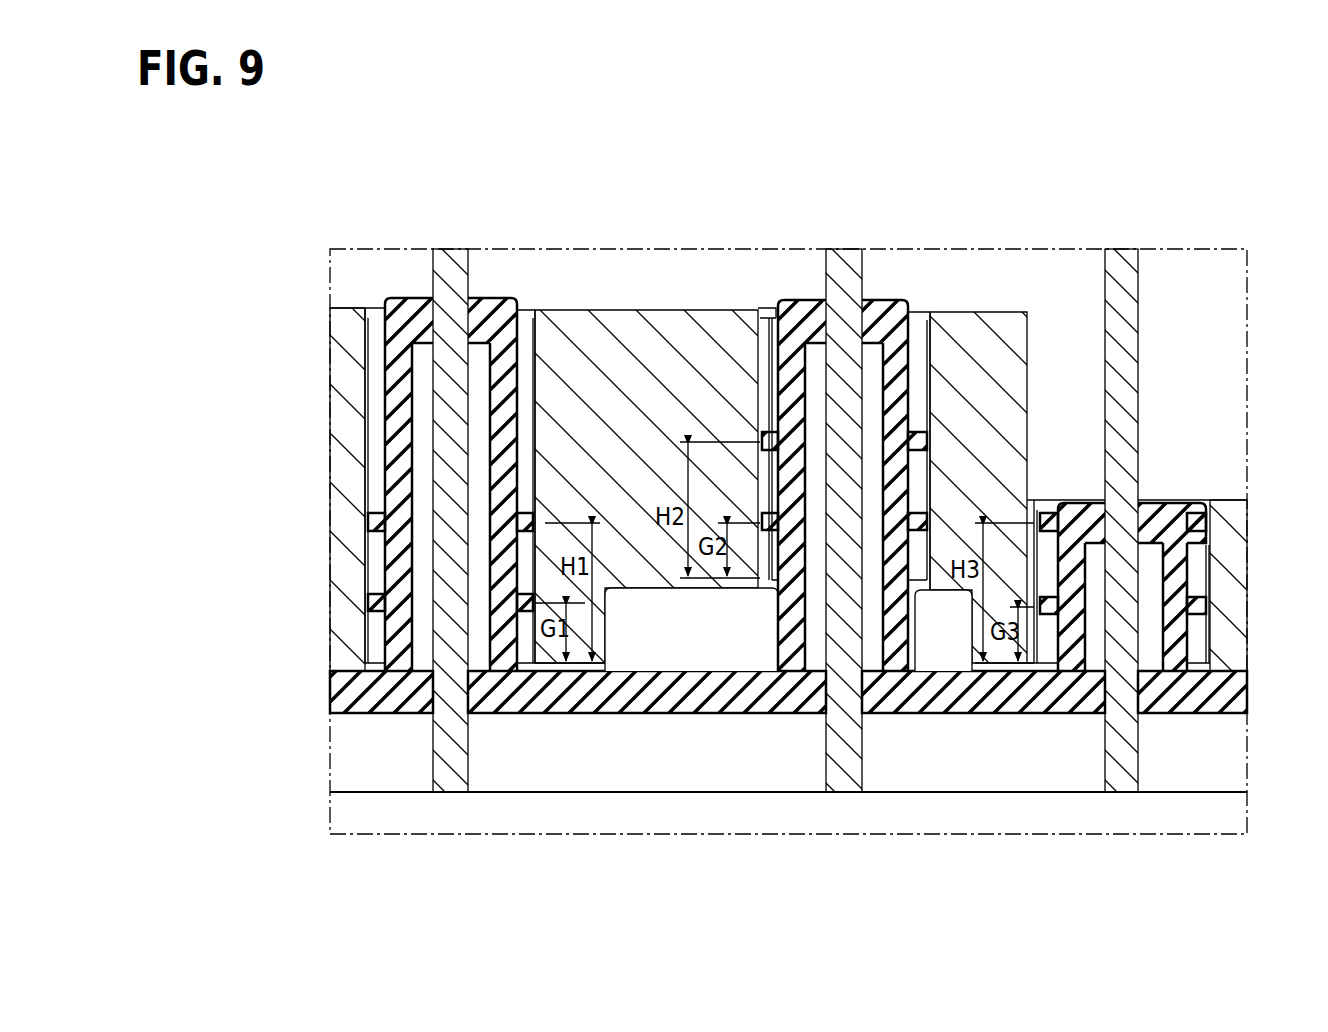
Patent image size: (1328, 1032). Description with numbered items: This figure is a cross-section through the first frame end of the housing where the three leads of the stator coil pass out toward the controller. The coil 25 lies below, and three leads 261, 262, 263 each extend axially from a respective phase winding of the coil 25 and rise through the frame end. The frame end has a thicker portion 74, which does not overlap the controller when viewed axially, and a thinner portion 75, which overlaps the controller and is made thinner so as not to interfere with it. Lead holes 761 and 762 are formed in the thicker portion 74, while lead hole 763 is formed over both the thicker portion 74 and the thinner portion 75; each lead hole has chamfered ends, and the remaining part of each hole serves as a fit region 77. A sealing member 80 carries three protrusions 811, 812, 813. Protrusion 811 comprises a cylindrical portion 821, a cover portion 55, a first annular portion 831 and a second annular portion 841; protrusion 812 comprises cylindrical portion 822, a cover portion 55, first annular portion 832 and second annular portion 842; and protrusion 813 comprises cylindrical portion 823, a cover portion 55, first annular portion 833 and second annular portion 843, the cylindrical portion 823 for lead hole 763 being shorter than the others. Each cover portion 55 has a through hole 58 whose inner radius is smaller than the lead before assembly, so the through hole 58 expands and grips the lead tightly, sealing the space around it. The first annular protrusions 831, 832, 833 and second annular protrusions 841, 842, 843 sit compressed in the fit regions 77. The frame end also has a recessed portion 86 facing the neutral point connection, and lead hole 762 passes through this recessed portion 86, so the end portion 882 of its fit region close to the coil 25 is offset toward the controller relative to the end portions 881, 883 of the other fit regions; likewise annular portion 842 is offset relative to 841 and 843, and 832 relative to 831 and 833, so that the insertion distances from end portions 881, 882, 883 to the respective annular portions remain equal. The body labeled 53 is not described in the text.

The coil 25 is at (1227, 780).
The bottom wall 53 is at (785, 777).
The cover portion 55 is at (423, 320).
The through hole 58 is at (438, 318).
The thicker portion 74 is at (616, 310).
The thinner portion 75 is at (1237, 658).
The fit region 77 is at (375, 462).
The sealing member 80 is at (560, 718).
The recessed portion 86 is at (632, 640).
The lead 261 is at (452, 290).
The lead 262 is at (851, 260).
The lead 263 is at (1127, 260).
The lead hole 761 is at (376, 349).
The lead hole 762 is at (768, 320).
The lead hole 763 is at (1040, 620).
The protrusion 811 is at (506, 300).
The protrusion 812 is at (898, 300).
The protrusion 813 is at (1183, 502).
The cylindrical portion 821 is at (397, 398).
The cylindrical portion 822 is at (790, 407).
The cylindrical portion 823 is at (1180, 643).
The first annular portion 831 is at (372, 603).
The first annular portion 832 is at (917, 520).
The first annular portion 833 is at (1203, 610).
The second annular portion 841 is at (372, 520).
The second annular portion 842 is at (923, 440).
The second annular portion 843 is at (1207, 525).
The end portion 881 is at (373, 668).
The end portion 882 is at (768, 690).
The end portion 883 is at (1200, 680).